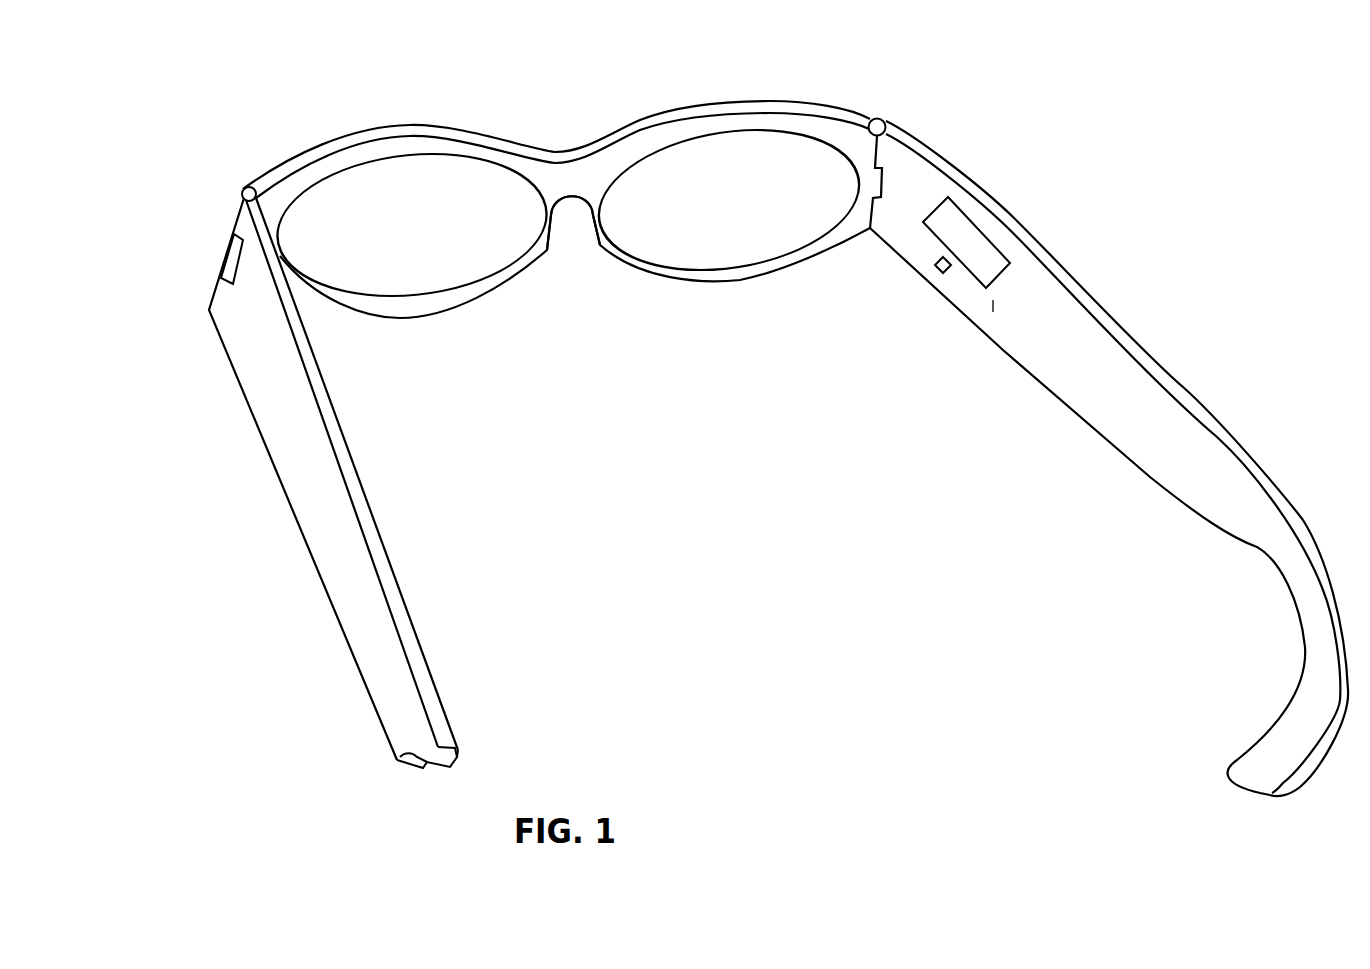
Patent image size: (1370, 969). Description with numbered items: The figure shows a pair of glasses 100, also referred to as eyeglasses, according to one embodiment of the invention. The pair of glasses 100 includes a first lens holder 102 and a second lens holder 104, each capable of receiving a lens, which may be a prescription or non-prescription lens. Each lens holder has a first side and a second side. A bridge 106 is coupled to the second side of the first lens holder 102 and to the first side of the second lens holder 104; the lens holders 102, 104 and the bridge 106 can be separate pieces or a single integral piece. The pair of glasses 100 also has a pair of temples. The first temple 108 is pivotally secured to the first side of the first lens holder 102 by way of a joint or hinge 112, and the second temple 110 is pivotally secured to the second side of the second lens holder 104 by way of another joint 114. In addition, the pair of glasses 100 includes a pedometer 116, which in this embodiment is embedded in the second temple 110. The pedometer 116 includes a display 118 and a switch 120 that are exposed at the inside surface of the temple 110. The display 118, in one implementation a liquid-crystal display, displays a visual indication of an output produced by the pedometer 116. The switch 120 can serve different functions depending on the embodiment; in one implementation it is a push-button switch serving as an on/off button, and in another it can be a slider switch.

The pair of glasses 100 is at (607, 353).
The first lens holder 102 is at (413, 227).
The second lens holder 104 is at (717, 206).
The bridge 106 is at (562, 184).
The first temple 108 is at (330, 565).
The second temple 110 is at (1047, 352).
The joint (or hinge) 112 is at (223, 270).
The joint 114 is at (882, 119).
The pedometer 116 is at (993, 312).
The display 118 is at (945, 232).
The switch 120 is at (947, 273).